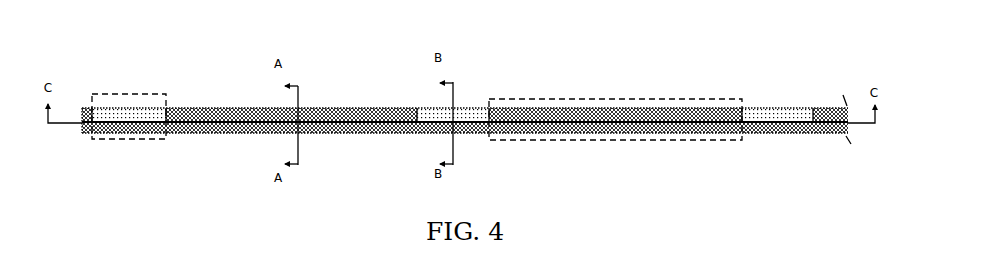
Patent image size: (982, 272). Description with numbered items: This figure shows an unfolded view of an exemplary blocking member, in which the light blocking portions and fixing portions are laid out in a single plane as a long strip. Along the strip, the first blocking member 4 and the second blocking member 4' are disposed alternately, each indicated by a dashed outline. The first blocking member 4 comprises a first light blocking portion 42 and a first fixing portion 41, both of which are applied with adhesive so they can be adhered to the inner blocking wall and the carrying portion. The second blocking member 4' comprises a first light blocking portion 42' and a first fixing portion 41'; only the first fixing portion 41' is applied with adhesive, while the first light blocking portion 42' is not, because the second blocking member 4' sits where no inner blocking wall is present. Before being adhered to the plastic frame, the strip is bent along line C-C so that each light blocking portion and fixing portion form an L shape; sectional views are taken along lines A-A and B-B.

The first blocking member 4 is at (642, 89).
The second blocking member 4' is at (158, 87).
The first fixing portion 41 is at (615, 145).
The first fixing portion 41' is at (130, 143).
The first light blocking portion 42 is at (615, 84).
The first light blocking portion 42' is at (131, 78).